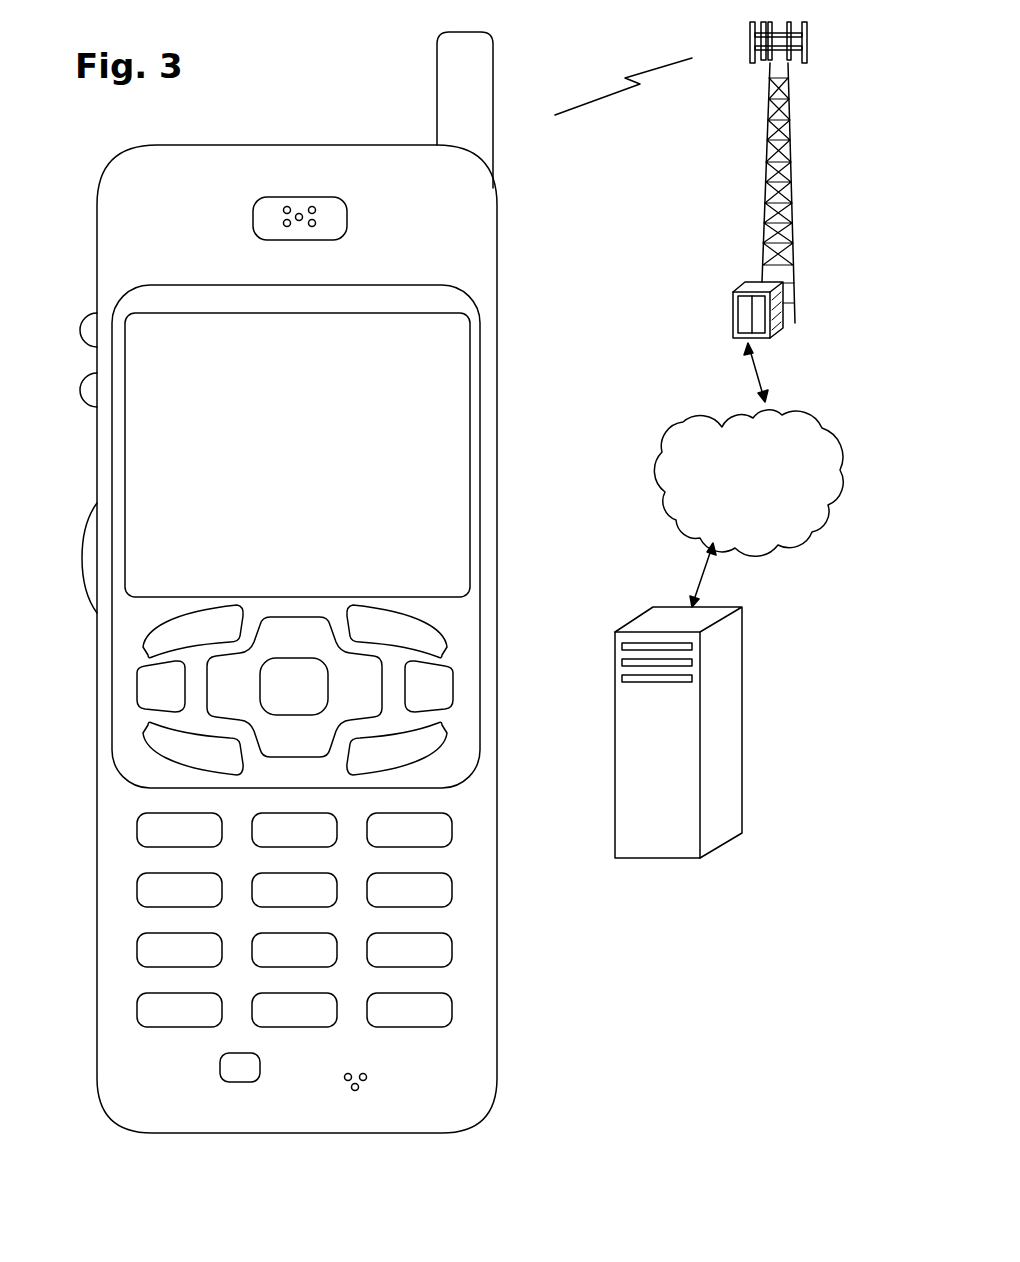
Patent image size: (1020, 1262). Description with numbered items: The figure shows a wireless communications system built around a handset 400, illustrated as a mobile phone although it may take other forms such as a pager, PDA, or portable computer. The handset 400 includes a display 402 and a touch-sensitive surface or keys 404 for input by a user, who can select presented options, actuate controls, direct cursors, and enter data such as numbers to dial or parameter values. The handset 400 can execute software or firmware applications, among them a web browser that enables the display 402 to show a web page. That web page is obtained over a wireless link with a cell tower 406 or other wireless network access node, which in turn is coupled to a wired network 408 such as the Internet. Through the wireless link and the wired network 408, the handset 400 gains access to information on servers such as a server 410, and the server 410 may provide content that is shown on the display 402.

The handset 400 is at (145, 1135).
The display 402 is at (480, 316).
The keys 404 is at (508, 607).
The cell tower 406 is at (762, 193).
The wired network 408 is at (678, 522).
The server 410 is at (655, 858).